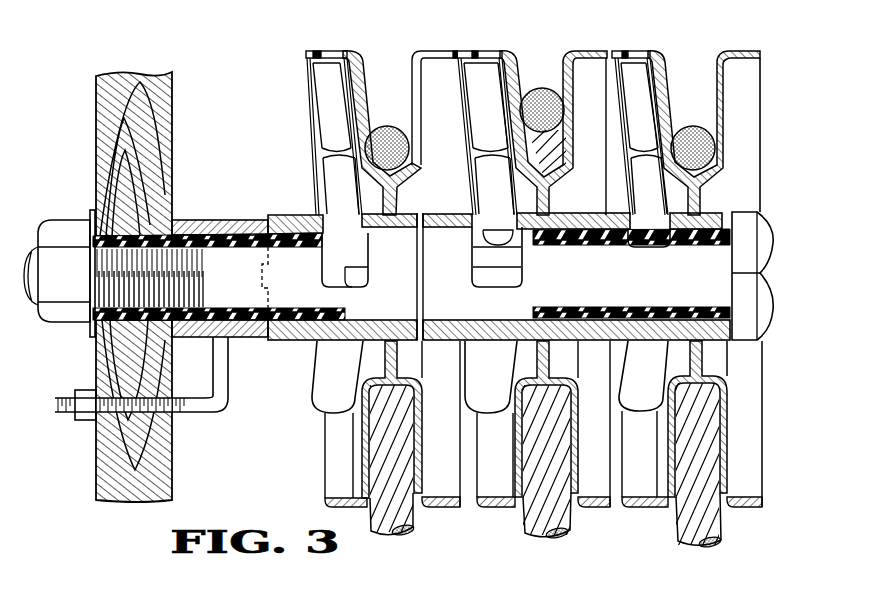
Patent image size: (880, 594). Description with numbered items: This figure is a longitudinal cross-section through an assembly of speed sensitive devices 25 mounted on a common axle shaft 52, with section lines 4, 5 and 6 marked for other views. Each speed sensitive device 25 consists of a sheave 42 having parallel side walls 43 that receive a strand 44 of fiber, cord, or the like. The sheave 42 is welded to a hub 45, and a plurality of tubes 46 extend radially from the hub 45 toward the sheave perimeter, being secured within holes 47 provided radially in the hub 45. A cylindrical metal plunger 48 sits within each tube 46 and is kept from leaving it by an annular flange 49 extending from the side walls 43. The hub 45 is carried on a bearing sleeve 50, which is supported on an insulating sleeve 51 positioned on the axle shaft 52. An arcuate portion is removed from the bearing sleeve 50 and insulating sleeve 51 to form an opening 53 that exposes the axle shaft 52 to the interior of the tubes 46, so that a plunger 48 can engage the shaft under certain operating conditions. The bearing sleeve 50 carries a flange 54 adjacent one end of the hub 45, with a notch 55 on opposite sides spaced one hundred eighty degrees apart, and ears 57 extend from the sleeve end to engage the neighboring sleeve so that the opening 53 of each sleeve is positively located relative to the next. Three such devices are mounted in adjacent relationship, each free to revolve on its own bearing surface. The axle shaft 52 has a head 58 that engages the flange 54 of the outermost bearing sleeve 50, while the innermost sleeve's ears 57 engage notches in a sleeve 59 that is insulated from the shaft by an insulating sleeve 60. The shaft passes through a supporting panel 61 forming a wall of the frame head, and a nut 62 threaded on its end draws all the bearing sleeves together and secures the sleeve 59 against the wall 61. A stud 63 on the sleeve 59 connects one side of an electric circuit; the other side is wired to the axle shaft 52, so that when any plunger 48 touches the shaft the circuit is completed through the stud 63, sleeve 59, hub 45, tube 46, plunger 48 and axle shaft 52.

The section line 4- 4 is at (322, 80).
The section line 5- 5 is at (695, 127).
The section line 6- 6 is at (540, 107).
The speed sensitive device 25 is at (367, 93).
The sheave 42 is at (422, 50).
The side walls 43 is at (365, 114).
The strand 44 is at (564, 110).
The hub 45 is at (295, 341).
The tubes 46 is at (320, 158).
The holes 47 is at (640, 247).
The plunger 48 is at (320, 112).
The annular flange 49 is at (308, 55).
The bearing sleeve 50 is at (276, 220).
The insulating sleeve 51 is at (305, 220).
The axle shaft 52 is at (411, 274).
The opening 53 is at (345, 271).
The flange 54 is at (417, 245).
The notch 55 is at (417, 270).
The ears 57 is at (270, 270).
The head 58 is at (762, 258).
The sleeve 59 is at (188, 220).
The insulating sleeve 60 is at (233, 236).
The supporting panel 61 is at (166, 140).
The nut 62 is at (67, 228).
The stud 63 is at (207, 408).